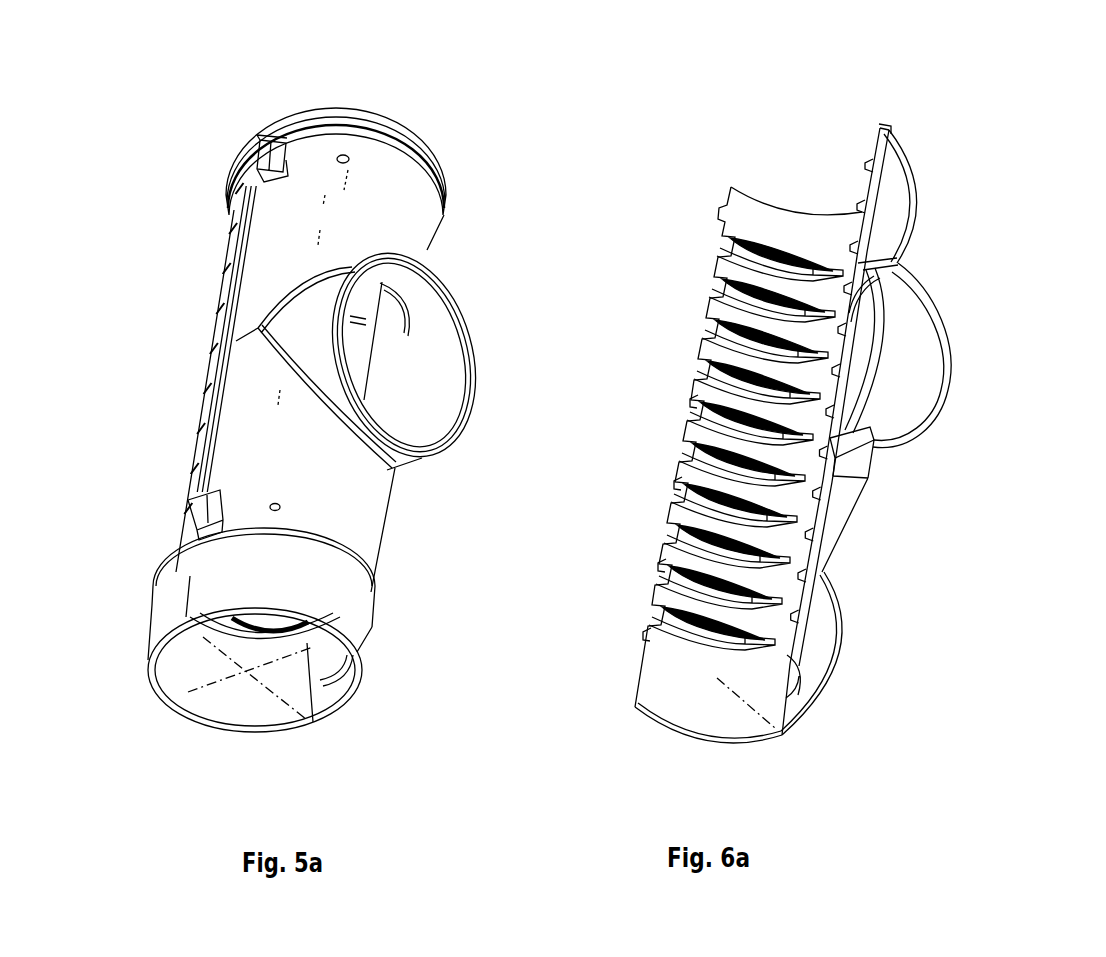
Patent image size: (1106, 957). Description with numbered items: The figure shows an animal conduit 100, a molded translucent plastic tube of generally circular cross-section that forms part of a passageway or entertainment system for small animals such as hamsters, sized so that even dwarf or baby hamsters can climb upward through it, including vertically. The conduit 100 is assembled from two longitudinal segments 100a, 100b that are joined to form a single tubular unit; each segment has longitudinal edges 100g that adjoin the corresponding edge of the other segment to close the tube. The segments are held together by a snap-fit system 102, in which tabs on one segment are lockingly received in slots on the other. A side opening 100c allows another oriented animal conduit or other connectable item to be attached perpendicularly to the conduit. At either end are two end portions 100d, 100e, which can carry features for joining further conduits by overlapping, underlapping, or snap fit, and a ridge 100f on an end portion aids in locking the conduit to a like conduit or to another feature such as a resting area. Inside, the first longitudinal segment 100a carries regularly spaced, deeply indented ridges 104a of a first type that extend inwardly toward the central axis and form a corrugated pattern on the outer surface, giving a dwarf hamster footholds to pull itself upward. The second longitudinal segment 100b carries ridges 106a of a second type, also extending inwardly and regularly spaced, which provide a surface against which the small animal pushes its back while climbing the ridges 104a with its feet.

In FIG. 5A, the animal conduit 100 is at (513, 142).
In FIG. 6A, the animal conduit 100 is at (995, 160).
In FIG. 5A, the first longitudinal segment 100a is at (238, 217).
In FIG. 6A, the first longitudinal segment 100a is at (792, 228).
In FIG. 5A, the second longitudinal segment 100b is at (330, 491).
In FIG. 6A, the second longitudinal segment 100b is at (843, 543).
In FIG. 5A, the opening 100c is at (452, 314).
In FIG. 6A, the opening 100c is at (937, 323).
In FIG. 5A, the end portion 100d is at (261, 130).
In FIG. 5A, the end portion 100e is at (310, 598).
In FIG. 5A, the ridge 100f is at (363, 117).
In FIG. 6A, the ridge 100f is at (888, 132).
In FIG. 5A, the longitudinal edge 100g is at (192, 585).
In FIG. 6A, the longitudinal edge 100g is at (782, 707).
In FIG. 5A, the snap-fit system 102 is at (197, 510).
In FIG. 6A, the ridges of a first ridge type 104a is at (682, 477).
In FIG. 6A, the ridges of a second ridge type 106a is at (860, 250).